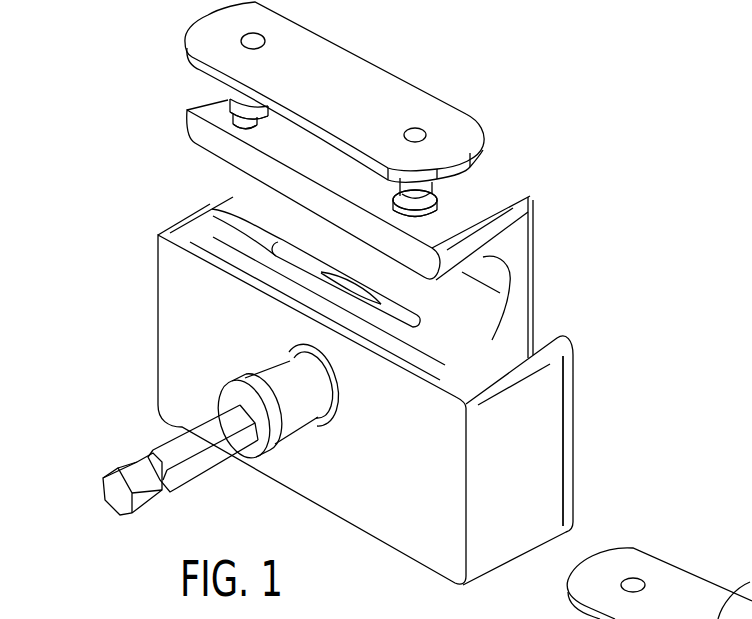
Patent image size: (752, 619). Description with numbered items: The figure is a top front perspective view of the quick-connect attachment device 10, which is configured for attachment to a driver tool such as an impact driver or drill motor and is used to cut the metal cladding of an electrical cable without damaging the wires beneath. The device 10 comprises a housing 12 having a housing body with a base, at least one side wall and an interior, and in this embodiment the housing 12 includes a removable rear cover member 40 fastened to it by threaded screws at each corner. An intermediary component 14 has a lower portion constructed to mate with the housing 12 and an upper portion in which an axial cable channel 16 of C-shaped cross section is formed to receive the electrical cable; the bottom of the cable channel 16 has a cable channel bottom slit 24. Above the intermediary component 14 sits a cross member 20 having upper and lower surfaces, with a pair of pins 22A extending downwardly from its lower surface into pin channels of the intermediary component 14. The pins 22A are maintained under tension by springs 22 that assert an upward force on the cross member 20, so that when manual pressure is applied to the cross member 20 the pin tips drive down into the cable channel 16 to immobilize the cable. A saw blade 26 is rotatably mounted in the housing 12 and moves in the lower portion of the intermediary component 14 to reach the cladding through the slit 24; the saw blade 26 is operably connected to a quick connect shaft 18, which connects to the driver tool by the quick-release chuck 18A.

The quick-connect attachment device 10 is at (602, 156).
The housing 12 is at (383, 520).
The intermediary component 14 is at (564, 277).
The axial cable channel 16 is at (470, 302).
The quick connect shaft 18 is at (187, 445).
The quick-release chuck 18A is at (102, 471).
The cross member 20 is at (418, 100).
The springs 22 is at (230, 106).
The pins 22A is at (243, 125).
The cable channel bottom slit 24 is at (210, 208).
The saw blade 26 is at (330, 279).
The removable rear cover member 40 is at (573, 402).